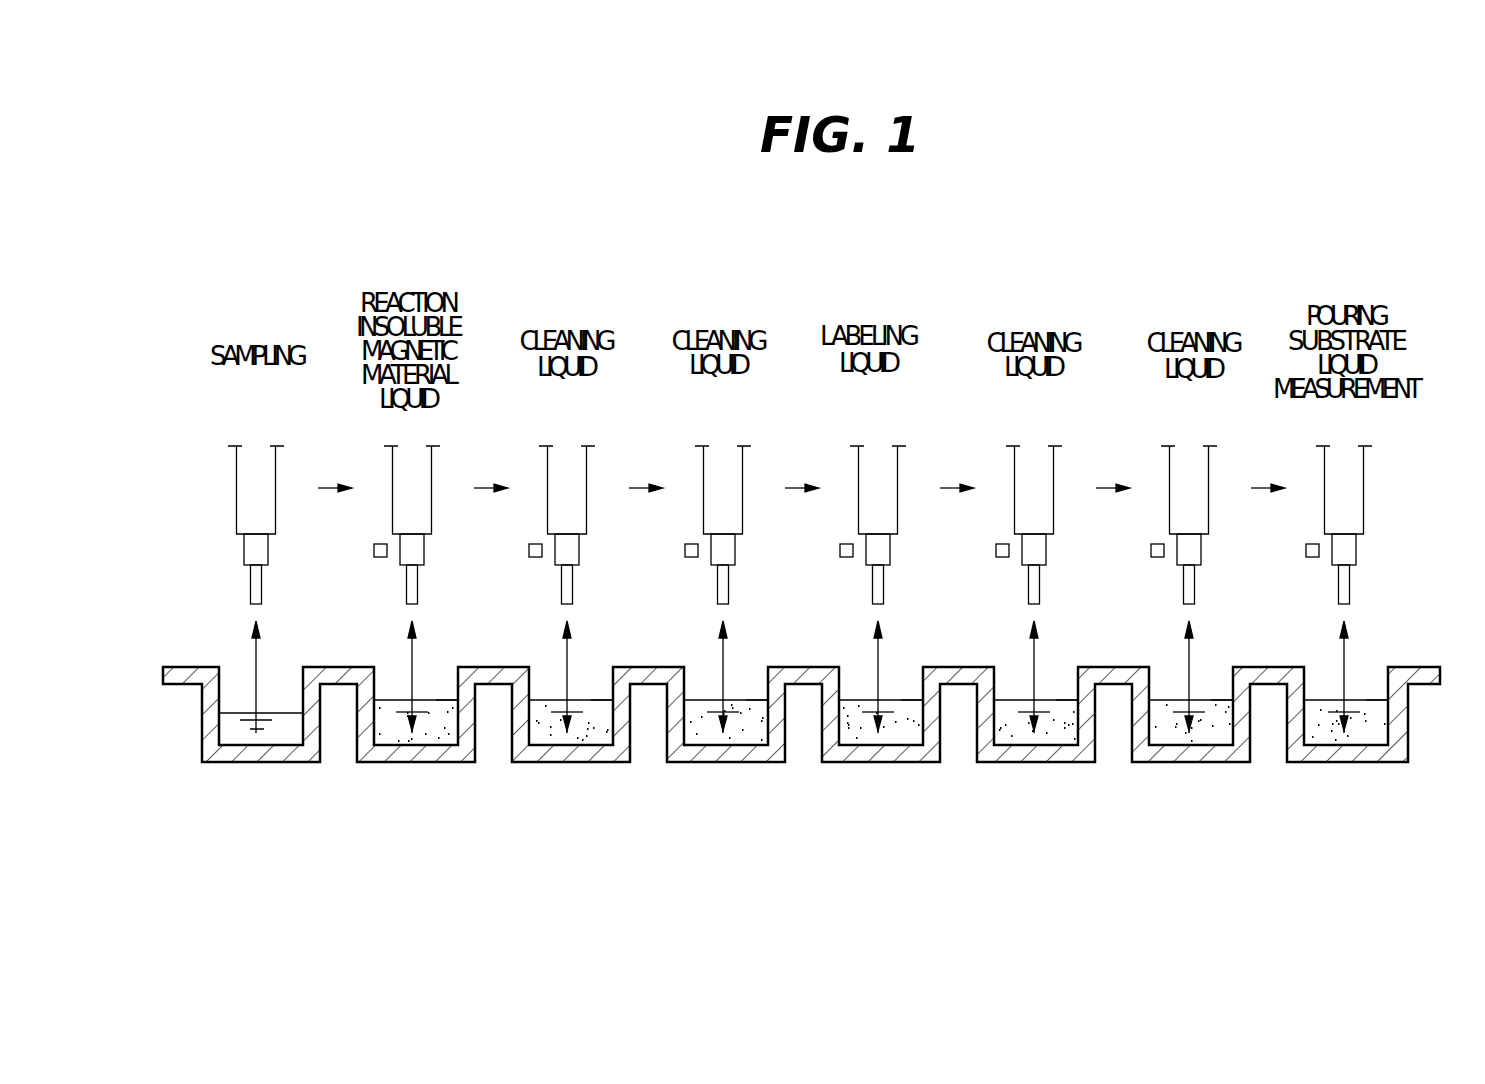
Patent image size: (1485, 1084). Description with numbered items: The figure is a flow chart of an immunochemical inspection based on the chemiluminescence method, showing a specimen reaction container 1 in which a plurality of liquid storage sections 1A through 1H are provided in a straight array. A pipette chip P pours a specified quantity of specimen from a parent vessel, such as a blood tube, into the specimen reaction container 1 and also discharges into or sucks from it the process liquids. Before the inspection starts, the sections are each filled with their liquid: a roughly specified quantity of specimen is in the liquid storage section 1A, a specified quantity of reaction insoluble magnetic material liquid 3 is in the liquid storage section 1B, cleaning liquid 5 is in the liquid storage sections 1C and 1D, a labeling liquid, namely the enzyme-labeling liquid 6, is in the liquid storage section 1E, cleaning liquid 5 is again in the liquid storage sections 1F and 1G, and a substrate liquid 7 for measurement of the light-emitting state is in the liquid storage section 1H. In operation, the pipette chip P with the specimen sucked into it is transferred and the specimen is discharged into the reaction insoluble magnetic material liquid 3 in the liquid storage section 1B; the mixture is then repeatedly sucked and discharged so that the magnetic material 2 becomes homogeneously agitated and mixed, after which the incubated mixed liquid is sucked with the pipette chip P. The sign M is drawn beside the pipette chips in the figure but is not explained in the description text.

The specimen reaction container 1 is at (1420, 667).
The liquid storage section 1A is at (218, 682).
The liquid storage section 1B is at (373, 682).
The liquid storage section 1C is at (528, 682).
The liquid storage section 1D is at (683, 682).
The liquid storage section 1E is at (838, 682).
The liquid storage section 1F is at (993, 682).
The liquid storage section 1G is at (1148, 682).
The liquid storage section 1H is at (1303, 682).
The magnetic material 2 is at (443, 733).
The reaction insoluble magnetic material liquid 3 is at (442, 710).
The cleaning liquid 5 is at (597, 710).
The enzyme-labeling liquid 6 is at (907, 710).
The substrate liquid 7 is at (1372, 710).
The pipette chip P is at (800, 501).
The magnet M is at (829, 557).